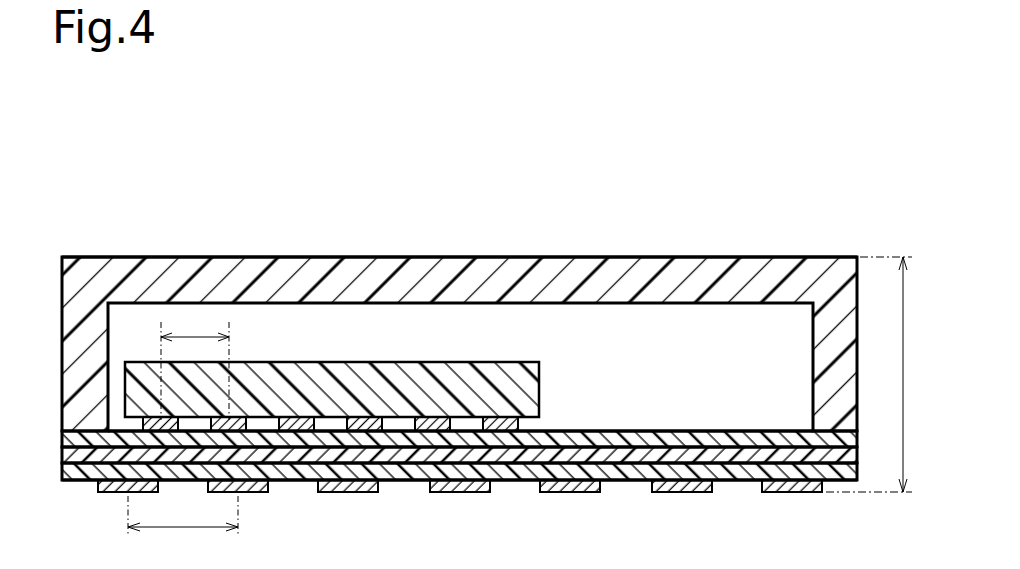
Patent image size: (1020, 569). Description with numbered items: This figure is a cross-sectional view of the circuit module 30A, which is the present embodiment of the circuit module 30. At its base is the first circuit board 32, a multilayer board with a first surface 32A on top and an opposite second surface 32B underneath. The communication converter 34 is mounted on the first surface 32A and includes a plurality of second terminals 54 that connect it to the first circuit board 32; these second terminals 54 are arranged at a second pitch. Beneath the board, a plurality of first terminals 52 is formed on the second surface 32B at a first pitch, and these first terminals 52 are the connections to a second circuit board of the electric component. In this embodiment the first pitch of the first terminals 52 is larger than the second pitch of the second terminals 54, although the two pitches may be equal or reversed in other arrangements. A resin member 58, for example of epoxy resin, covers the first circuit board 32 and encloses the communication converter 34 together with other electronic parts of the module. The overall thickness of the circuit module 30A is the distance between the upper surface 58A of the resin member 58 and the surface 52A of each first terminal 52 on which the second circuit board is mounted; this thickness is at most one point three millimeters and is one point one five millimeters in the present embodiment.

The circuit module 30A is at (111, 186).
The circuit module 30 is at (467, 340).
The resin member 58 is at (459, 310).
The upper surface of resin member 58A is at (489, 257).
The first circuit board 32 is at (432, 455).
The first surface 32A is at (706, 431).
The second surface 32B is at (740, 481).
The communication converter 34 is at (539, 388).
The second terminals 54 is at (140, 427).
The first terminals 52 is at (108, 493).
The surface of first terminal 52A is at (796, 493).